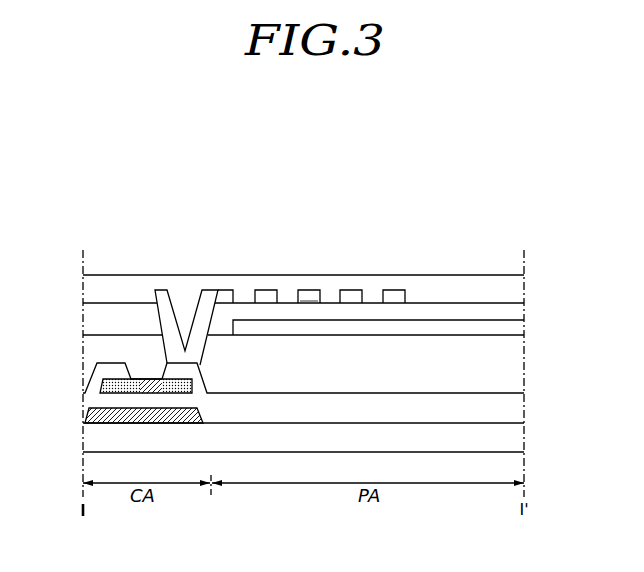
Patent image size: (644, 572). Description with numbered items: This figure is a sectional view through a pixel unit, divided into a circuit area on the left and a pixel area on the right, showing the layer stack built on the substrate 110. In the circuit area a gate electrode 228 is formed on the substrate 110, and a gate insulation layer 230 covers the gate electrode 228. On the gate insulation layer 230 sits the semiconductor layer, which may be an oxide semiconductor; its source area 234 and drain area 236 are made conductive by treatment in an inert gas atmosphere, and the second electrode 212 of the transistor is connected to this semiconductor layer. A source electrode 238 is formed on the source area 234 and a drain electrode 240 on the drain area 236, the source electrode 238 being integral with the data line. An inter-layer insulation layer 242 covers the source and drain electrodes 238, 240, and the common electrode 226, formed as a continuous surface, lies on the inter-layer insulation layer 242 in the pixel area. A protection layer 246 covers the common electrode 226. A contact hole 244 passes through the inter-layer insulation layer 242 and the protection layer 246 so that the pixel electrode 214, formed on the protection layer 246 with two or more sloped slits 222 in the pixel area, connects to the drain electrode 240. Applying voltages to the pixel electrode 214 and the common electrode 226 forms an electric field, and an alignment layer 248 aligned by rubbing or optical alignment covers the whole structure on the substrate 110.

The substrate 110 is at (518, 442).
The gate electrode 228 is at (86, 412).
The gate insulation layer 230 is at (518, 412).
The second electrode 212 is at (113, 377).
The source area 234 is at (97, 363).
The drain area 236 is at (150, 377).
The source electrode 238 is at (84, 370).
The drain electrode 240 is at (207, 382).
The inter-layer insulation layer 242 is at (518, 348).
The common electrode 226 is at (518, 322).
The contact hole 244 is at (210, 318).
The protection layer 246 is at (518, 312).
The pixel electrode 214 is at (310, 290).
The slits 222 is at (322, 296).
The alignment layer 248 is at (518, 286).